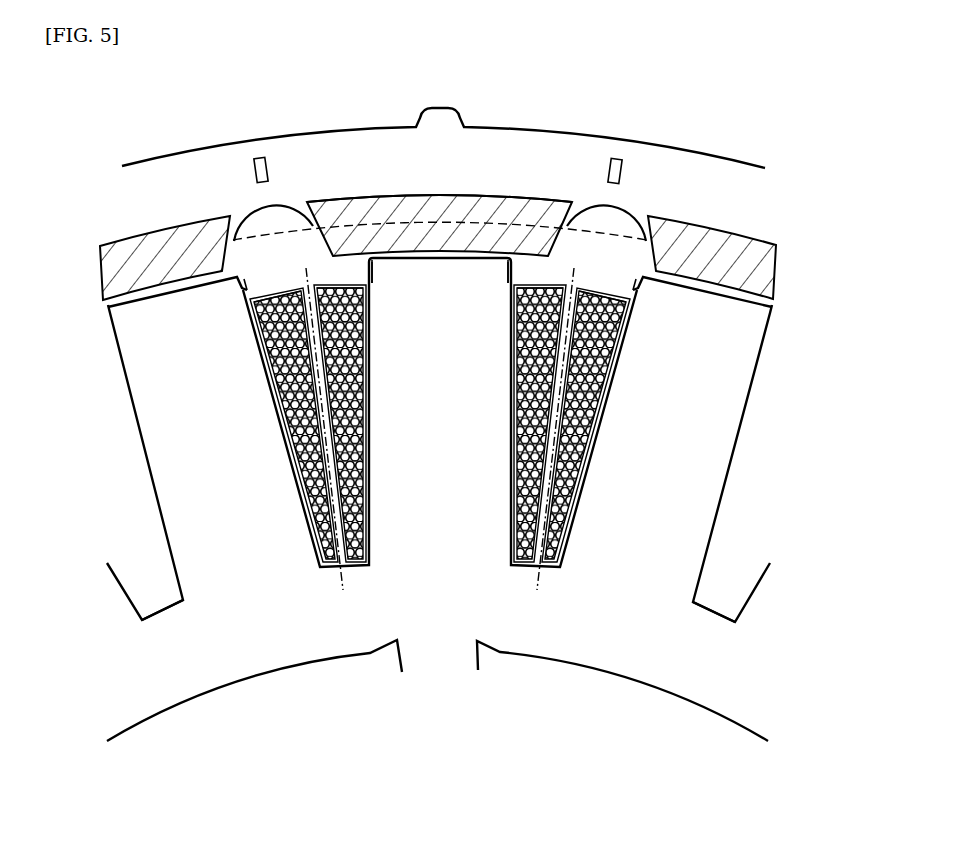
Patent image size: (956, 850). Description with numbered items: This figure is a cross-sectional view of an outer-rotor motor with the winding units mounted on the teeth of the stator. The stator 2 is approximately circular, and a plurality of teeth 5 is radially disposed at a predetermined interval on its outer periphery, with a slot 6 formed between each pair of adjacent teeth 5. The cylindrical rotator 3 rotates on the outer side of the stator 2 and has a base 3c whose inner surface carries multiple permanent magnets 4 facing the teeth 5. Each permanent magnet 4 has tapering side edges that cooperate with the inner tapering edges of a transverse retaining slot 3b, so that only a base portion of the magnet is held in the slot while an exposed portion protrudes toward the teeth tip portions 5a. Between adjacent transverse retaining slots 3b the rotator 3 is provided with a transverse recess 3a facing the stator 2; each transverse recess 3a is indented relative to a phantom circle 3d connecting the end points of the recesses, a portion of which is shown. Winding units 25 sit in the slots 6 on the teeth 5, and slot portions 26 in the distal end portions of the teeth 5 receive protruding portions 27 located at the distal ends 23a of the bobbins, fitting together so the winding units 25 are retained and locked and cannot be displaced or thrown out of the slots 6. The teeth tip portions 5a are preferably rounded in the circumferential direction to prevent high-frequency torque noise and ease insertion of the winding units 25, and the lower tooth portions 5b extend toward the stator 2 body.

The stator 2 is at (528, 633).
The rotator 3 is at (318, 146).
The transverse recess 3a is at (278, 205).
The transverse retaining slot 3b is at (427, 203).
The base 3c is at (560, 153).
The phantom circle 3d is at (297, 200).
The permanent magnet 4 is at (167, 245).
The tooth 5 is at (177, 453).
The teeth tip portion 5a is at (172, 306).
The tooth bottom portion 5b is at (200, 573).
The slot 6 is at (727, 585).
The distal end of bobbin 23a is at (376, 283).
The winding unit 25 is at (655, 340).
The slot portion 26 is at (245, 302).
The protruding portion 27 is at (252, 292).